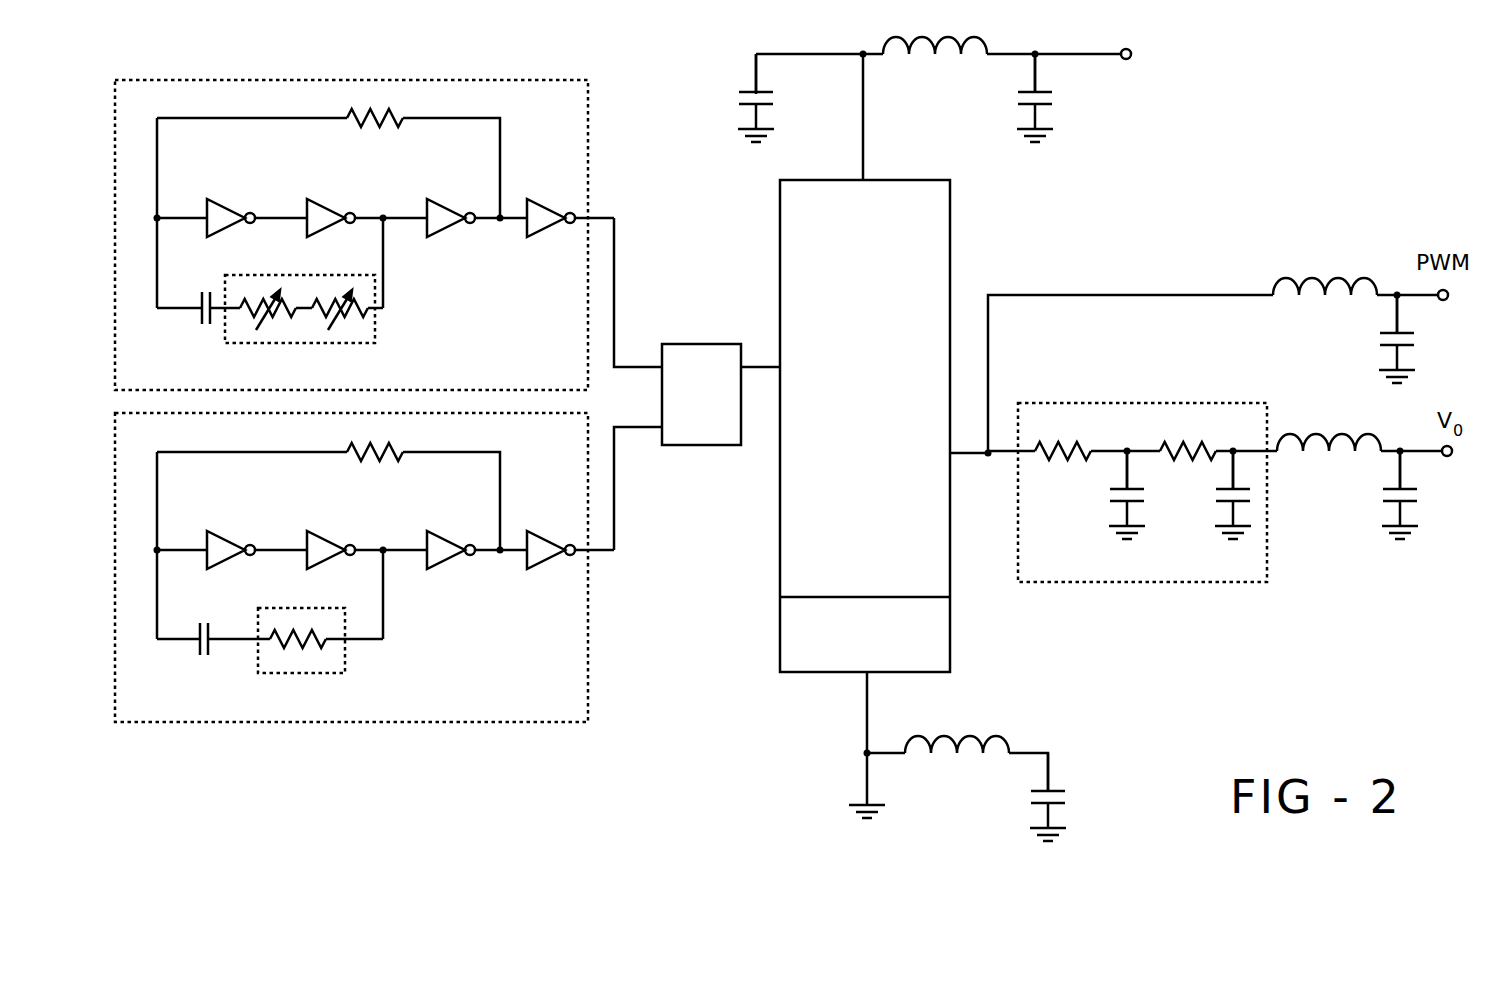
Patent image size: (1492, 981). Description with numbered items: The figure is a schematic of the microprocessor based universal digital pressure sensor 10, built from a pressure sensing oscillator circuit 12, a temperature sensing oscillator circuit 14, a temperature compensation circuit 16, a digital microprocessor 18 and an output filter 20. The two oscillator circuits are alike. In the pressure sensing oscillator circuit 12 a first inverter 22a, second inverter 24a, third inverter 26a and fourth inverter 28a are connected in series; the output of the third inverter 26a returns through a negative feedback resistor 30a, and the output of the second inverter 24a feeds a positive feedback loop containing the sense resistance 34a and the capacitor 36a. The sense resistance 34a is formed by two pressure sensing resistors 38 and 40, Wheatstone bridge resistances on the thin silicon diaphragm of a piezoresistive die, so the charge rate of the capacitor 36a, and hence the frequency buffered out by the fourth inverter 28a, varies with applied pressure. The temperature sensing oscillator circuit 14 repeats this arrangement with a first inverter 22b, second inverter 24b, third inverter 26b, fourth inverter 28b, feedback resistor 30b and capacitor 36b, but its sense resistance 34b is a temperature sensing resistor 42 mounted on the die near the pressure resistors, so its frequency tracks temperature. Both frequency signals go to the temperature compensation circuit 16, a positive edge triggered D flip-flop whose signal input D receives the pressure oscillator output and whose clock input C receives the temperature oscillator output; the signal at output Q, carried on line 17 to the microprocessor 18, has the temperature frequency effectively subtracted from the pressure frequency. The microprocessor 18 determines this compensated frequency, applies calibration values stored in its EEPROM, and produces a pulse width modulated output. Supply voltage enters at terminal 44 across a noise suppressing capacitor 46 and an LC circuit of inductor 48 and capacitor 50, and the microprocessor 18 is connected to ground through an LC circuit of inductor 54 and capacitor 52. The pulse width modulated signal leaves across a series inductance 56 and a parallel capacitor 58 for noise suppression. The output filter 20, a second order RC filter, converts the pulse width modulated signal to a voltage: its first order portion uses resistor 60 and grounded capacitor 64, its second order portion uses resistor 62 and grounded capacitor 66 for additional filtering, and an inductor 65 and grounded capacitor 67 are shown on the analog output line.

The microprocessor based universal digital pressure sensor 10 is at (1232, 137).
The pressure sensing oscillator circuit 12 is at (283, 80).
The temperature sensing oscillator circuit 14 is at (262, 722).
The temperature compensation circuit 16 is at (700, 344).
The flip-flop output line 17 is at (760, 367).
The digital microprocessor 18 is at (950, 248).
The output filter 20 is at (1085, 583).
The first inverter 22a is at (233, 198).
The second inverter 24a is at (333, 198).
The third inverter 26a is at (452, 198).
The fourth inverter 28a is at (548, 198).
The resistor 30a is at (387, 110).
The pressure sensing resistance 34a is at (375, 327).
The capacitor 36a is at (198, 300).
The pressure sensing resistor 38 is at (283, 320).
The pressure sensing resistor 40 is at (358, 320).
The first inverter 22b is at (238, 530).
The second inverter 24b is at (338, 530).
The third inverter 26b is at (457, 530).
The fourth inverter 28b is at (552, 530).
The resistor 30b is at (387, 450).
The sense resistance 34b is at (345, 655).
The capacitor 36b is at (198, 630).
The temperature sensing resistor 42 is at (302, 645).
The Vcc supply terminal 44 is at (1103, 53).
The noise suppressing capacitor 46 is at (1045, 103).
The inductor 48 is at (915, 40).
The capacitor 50 is at (760, 91).
The capacitor 52 is at (1058, 792).
The inductor 54 is at (945, 737).
The series inductance 56 is at (1333, 275).
The parallel capacitor 58 is at (1382, 343).
The resistor 60 is at (1055, 435).
The resistor 62 is at (1175, 435).
The grounded capacitor 64 is at (1115, 500).
The output inductor 65 is at (1323, 437).
The grounded capacitor 66 is at (1226, 500).
The output capacitor 67 is at (1415, 500).